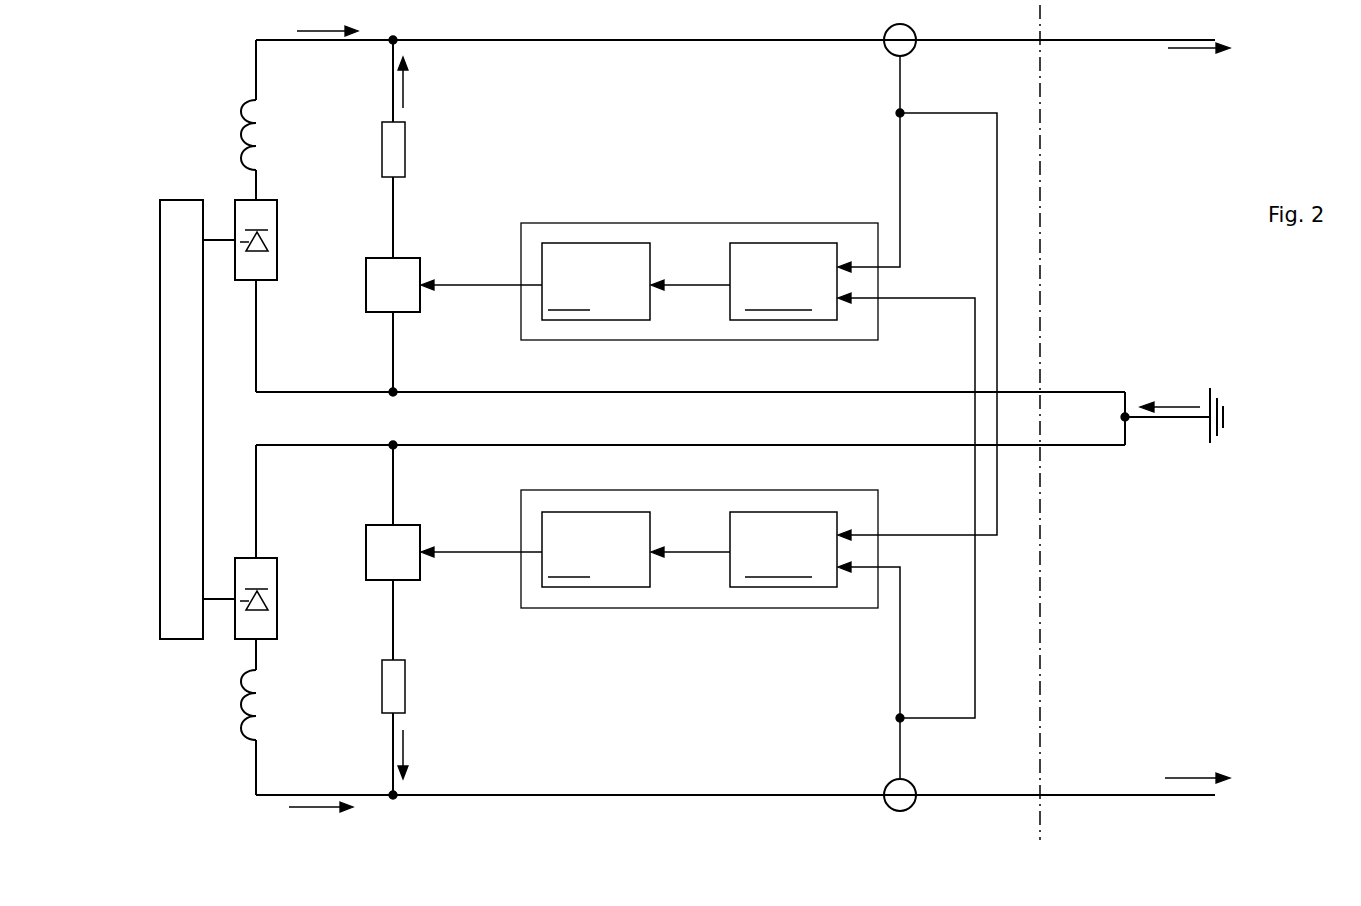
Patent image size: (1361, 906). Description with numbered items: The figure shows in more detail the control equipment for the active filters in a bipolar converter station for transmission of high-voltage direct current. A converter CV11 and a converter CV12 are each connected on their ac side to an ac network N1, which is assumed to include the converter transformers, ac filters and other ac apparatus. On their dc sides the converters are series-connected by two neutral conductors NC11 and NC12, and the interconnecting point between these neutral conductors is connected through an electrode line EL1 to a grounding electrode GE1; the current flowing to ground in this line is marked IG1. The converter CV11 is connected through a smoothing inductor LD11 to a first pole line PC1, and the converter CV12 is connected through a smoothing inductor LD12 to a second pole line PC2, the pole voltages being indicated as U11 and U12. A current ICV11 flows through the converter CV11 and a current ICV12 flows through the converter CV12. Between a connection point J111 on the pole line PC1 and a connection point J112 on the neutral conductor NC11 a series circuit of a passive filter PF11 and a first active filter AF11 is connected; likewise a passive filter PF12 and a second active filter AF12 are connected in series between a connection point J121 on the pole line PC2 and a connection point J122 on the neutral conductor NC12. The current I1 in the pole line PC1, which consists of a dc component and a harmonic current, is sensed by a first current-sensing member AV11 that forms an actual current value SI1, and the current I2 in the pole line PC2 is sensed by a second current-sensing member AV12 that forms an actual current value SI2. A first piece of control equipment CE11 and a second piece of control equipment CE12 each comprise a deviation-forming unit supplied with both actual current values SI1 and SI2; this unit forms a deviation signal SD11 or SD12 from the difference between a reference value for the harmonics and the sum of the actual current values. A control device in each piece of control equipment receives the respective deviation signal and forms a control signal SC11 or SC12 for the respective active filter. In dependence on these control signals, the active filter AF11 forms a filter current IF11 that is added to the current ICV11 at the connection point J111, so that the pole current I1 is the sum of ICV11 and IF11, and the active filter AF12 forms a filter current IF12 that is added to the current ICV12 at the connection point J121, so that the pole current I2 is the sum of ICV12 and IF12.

The current through converter CV11 ICV11 is at (317, 20).
The current through converter CV12 ICV12 is at (310, 820).
The smoothing inductor LD11 is at (248, 100).
The smoothing inductor LD12 is at (246, 705).
The connection point J111 is at (389, 45).
The connection point J112 is at (392, 400).
The connection point J121 is at (390, 788).
The connection point J122 is at (395, 452).
The filter current IF11 is at (428, 82).
The filter current IF12 is at (428, 754).
The passive filter PF11 is at (382, 160).
The passive filter PF12 is at (380, 700).
The converter CV11 is at (277, 228).
The converter CV12 is at (278, 575).
The ac network N1 is at (172, 640).
The first active filter AF11 is at (366, 298).
The second active filter AF12 is at (366, 540).
The control signal SC11 is at (481, 274).
The control signal SC12 is at (481, 541).
The deviation signal SD11 is at (690, 274).
The deviation signal SD12 is at (690, 541).
The first piece of control equipment CE11 is at (680, 223).
The second piece of control equipment CE12 is at (695, 608).
The first current-sensing member AV11 is at (888, 50).
The second current-sensing member AV12 is at (887, 783).
The actual current value SI1 is at (914, 59).
The actual current value SI2 is at (912, 773).
The first pole line PC1 is at (1118, 43).
The second pole line PC2 is at (1123, 795).
The current in pole line PC1 I1 is at (1199, 61).
The current in pole line PC2 I2 is at (1197, 766).
The pole voltage U11 is at (1079, 199).
The pole voltage U12 is at (1076, 631).
The neutral conductor NC11 is at (762, 392).
The neutral conductor NC12 is at (907, 445).
The electrode line EL1 is at (1188, 418).
The grounding electrode GE1 is at (1223, 380).
The ground current IG1 is at (1170, 394).